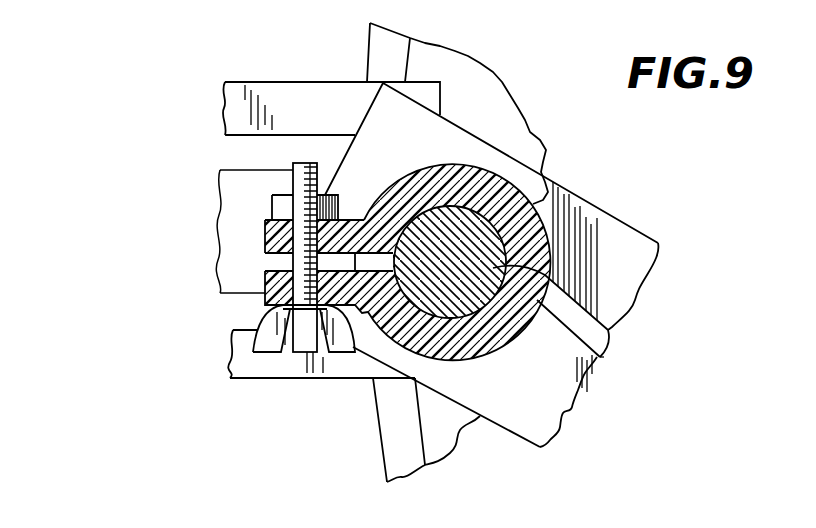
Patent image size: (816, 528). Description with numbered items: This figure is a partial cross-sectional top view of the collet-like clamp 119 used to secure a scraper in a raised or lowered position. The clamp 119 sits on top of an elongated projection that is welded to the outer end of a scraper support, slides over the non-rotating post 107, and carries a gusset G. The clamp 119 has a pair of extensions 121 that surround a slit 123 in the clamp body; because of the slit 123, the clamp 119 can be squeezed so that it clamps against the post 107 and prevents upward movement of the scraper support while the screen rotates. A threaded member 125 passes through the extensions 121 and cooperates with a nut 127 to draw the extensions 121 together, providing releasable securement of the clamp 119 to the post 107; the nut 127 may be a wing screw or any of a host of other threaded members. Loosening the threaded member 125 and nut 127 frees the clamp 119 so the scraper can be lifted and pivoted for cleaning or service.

The post 107 is at (610, 328).
The clamp 119 is at (543, 158).
The extensions 121 is at (264, 288).
The slit 123 is at (340, 263).
The threaded member 125 is at (298, 335).
The nut 127 is at (273, 207).
The gusset G is at (604, 357).